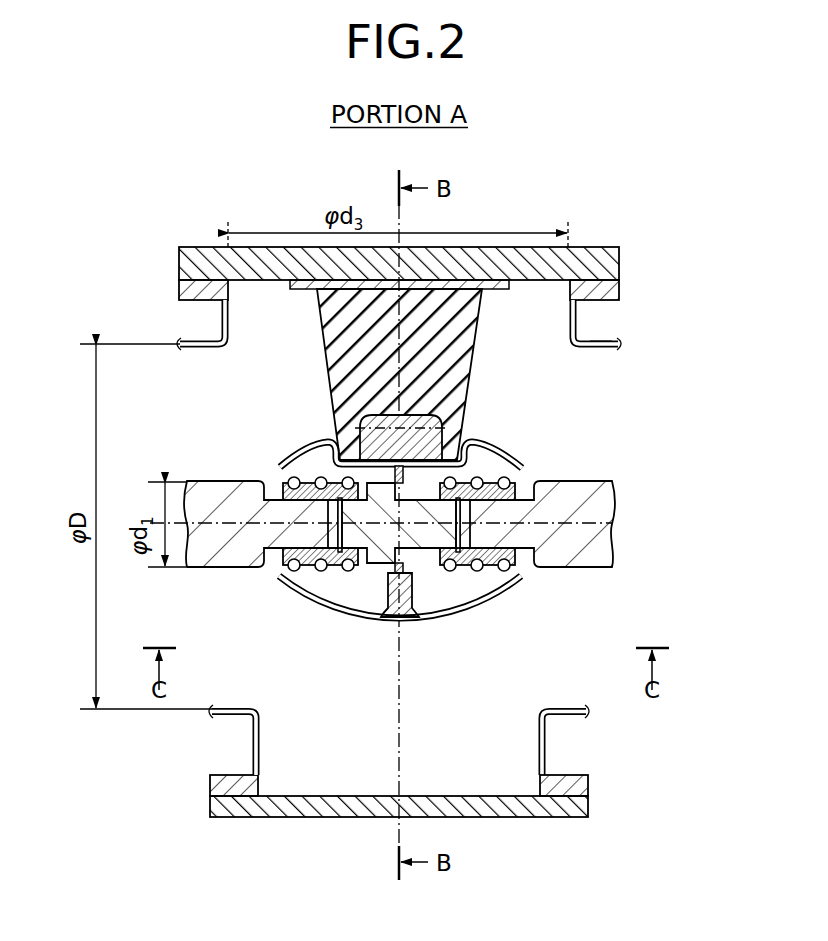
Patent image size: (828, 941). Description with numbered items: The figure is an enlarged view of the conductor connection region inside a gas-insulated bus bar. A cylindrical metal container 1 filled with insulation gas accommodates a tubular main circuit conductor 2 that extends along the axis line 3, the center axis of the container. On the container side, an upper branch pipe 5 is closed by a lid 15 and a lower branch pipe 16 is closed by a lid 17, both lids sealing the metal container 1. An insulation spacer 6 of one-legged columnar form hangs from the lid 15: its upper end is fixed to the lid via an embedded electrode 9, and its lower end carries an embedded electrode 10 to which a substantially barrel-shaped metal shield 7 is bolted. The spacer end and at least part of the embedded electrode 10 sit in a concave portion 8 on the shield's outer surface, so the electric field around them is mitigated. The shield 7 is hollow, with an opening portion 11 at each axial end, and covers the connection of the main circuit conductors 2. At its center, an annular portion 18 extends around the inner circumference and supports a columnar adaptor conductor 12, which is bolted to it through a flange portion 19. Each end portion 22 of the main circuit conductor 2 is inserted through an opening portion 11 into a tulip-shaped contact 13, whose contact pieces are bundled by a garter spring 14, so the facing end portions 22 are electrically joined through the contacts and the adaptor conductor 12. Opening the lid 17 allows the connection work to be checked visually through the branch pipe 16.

The metal container 1 is at (603, 340).
The main circuit conductor 2 is at (223, 570).
The axis line 3 is at (612, 523).
The branch pipe 5 is at (588, 313).
The insulation spacer 6 is at (468, 339).
The shield 7 is at (305, 462).
The concave portion 8 is at (455, 443).
The embedded electrode 9 is at (426, 300).
The embedded electrode 10 is at (411, 417).
The opening portion 11 is at (264, 482).
The adaptor conductor 12 is at (410, 563).
The contact 13 is at (318, 566).
The garter spring 14 is at (291, 478).
The lid 15 is at (214, 262).
The branch pipe 16 is at (252, 765).
The lid 17 is at (565, 816).
The annular portion 18 is at (399, 600).
The flange portion 19 is at (368, 556).
The end portion 22 is at (283, 566).